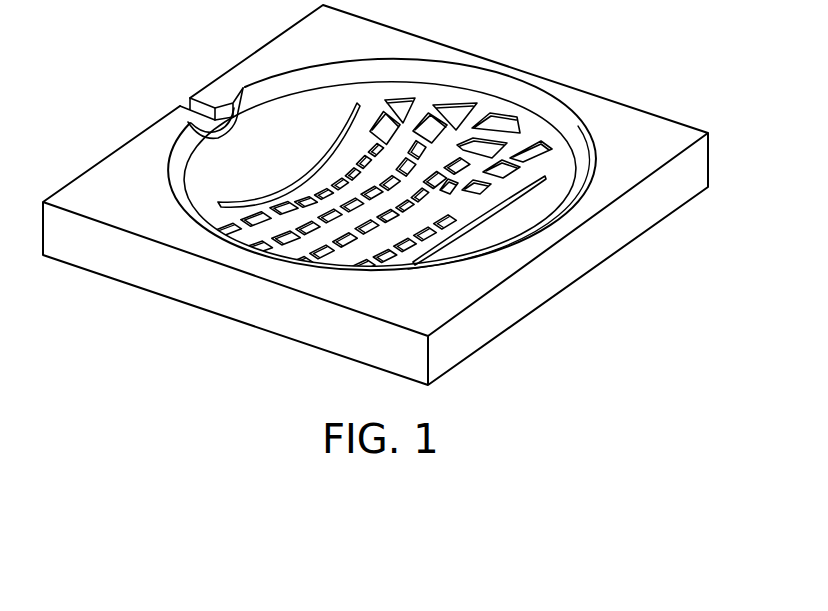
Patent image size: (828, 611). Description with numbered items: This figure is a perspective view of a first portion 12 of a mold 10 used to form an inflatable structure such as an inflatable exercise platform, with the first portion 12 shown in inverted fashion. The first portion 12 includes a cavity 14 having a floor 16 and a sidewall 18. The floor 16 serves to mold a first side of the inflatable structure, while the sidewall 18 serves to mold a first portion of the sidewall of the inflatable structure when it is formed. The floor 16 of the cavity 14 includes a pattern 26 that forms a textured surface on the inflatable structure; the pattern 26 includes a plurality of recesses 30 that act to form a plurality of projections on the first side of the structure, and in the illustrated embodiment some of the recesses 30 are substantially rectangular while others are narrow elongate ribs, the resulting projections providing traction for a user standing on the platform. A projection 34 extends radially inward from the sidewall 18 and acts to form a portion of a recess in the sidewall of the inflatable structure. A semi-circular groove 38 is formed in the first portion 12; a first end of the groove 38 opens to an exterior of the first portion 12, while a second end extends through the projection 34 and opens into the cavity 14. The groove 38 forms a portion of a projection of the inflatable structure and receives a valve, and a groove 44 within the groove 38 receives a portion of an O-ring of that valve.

The mold 10 is at (178, 363).
The first portion 12 is at (155, 283).
The cavity 14 is at (522, 224).
The floor 16 is at (565, 188).
The sidewall 18 is at (575, 143).
The pattern 26 is at (315, 152).
The recesses 30 is at (463, 115).
The projection 34 is at (216, 131).
The semi-circular groove 38 is at (198, 108).
The groove 44 is at (217, 108).